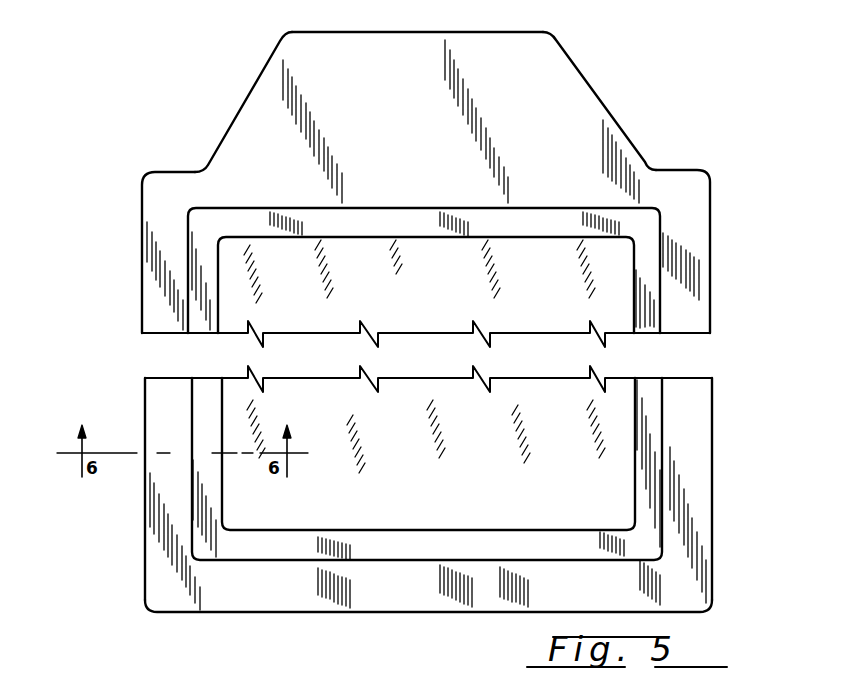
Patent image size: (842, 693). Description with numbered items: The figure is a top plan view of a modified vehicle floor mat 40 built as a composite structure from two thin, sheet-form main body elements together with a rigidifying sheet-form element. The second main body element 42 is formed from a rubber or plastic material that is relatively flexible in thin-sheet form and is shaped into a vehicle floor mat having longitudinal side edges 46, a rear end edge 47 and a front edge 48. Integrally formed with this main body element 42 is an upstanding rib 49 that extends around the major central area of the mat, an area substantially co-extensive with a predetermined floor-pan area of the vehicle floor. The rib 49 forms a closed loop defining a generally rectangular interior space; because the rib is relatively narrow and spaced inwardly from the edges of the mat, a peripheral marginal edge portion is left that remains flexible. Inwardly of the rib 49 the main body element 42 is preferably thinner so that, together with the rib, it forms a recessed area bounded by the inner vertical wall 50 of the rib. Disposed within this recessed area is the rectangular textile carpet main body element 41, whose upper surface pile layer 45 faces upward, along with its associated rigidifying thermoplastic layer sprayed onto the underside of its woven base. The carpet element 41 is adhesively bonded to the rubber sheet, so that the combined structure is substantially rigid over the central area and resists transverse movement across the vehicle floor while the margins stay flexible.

The floor mat 40 is at (620, 108).
The main body element 41 is at (615, 447).
The second main body element 42 is at (695, 490).
The upper surface pile layer 45 is at (443, 296).
The longitudinal side edges 46 is at (142, 233).
The rear end edge 47 is at (392, 613).
The front edge 48 is at (298, 32).
The upstanding rib 49 is at (653, 313).
The inner vertical wall 50 is at (311, 526).